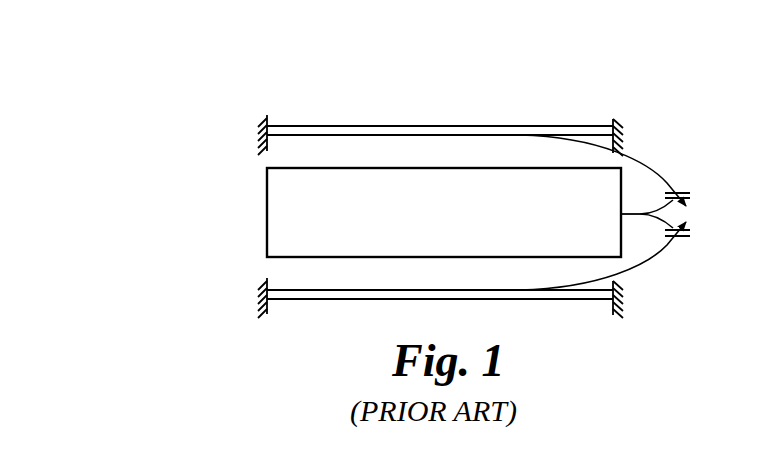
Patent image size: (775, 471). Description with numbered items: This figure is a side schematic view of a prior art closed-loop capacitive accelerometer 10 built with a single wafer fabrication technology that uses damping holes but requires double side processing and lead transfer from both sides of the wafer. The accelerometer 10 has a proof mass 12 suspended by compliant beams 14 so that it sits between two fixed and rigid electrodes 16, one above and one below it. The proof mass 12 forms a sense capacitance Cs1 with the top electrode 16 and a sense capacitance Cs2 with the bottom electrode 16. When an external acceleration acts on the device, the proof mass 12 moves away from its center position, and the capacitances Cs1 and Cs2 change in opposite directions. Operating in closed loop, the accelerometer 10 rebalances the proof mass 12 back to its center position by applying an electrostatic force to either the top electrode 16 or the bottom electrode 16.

The accelerometer 10 is at (598, 88).
The proof mass 12 is at (267, 240).
The compliant beams 14 is at (217, 212).
The fixed and rigid electrodes 16 is at (337, 125).
The sense capacitance Cs1 is at (628, 174).
The sense capacitance Cs2 is at (628, 252).